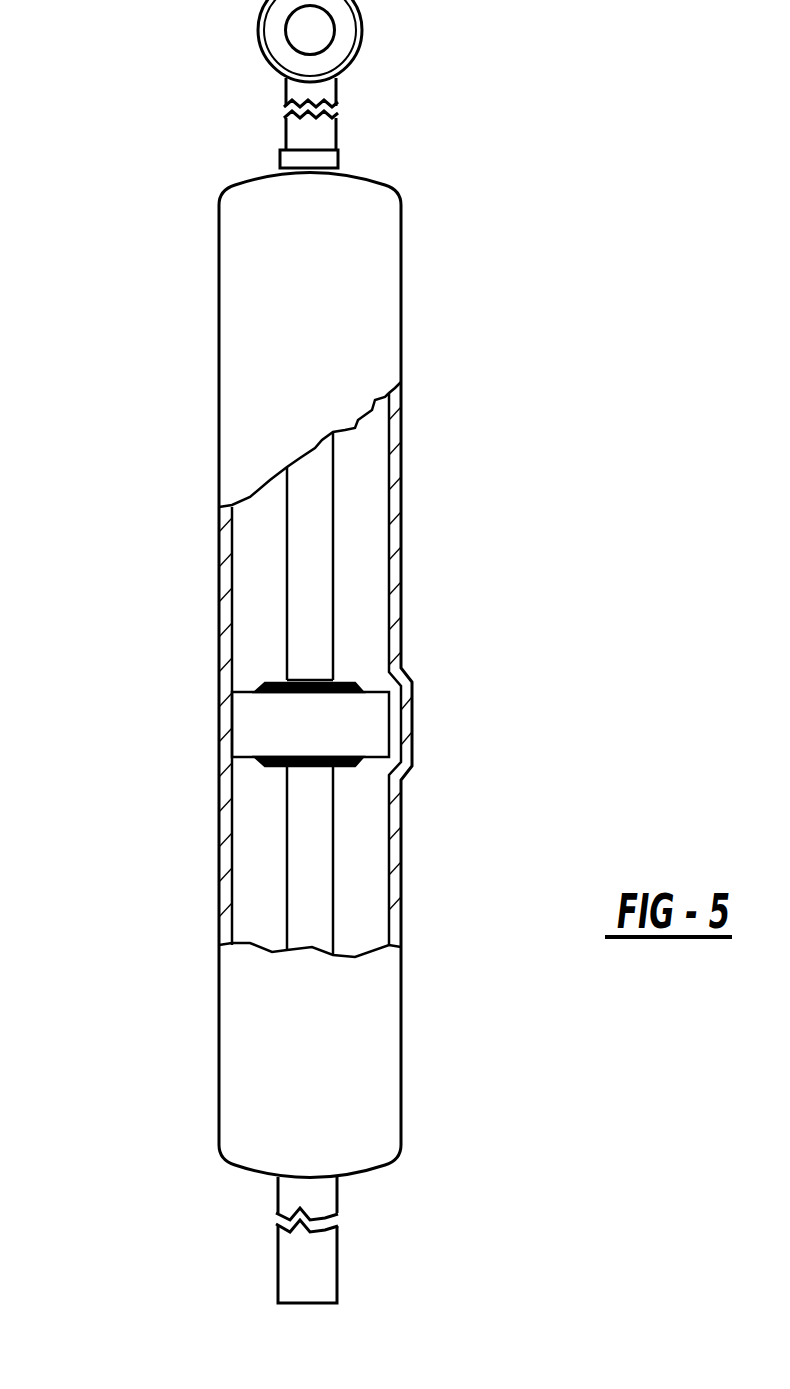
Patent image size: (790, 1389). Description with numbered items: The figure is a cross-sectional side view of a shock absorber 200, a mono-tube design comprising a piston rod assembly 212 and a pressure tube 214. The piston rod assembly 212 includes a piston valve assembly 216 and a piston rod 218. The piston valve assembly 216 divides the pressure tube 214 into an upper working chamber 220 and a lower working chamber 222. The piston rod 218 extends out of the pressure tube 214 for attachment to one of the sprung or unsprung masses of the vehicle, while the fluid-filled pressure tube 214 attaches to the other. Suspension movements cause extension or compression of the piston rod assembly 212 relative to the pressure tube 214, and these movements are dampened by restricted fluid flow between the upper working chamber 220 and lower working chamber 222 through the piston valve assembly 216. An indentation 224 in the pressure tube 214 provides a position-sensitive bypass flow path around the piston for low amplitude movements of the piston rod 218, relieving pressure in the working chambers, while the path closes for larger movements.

The shock absorber 200 is at (182, 196).
The piston rod assembly 212 is at (262, 623).
The pressure tube 214 is at (393, 863).
The piston valve assembly 216 is at (262, 772).
The piston rod 218 is at (300, 592).
The upper working chamber 220 is at (358, 490).
The lower working chamber 222 is at (248, 876).
The indentation 224 is at (413, 725).